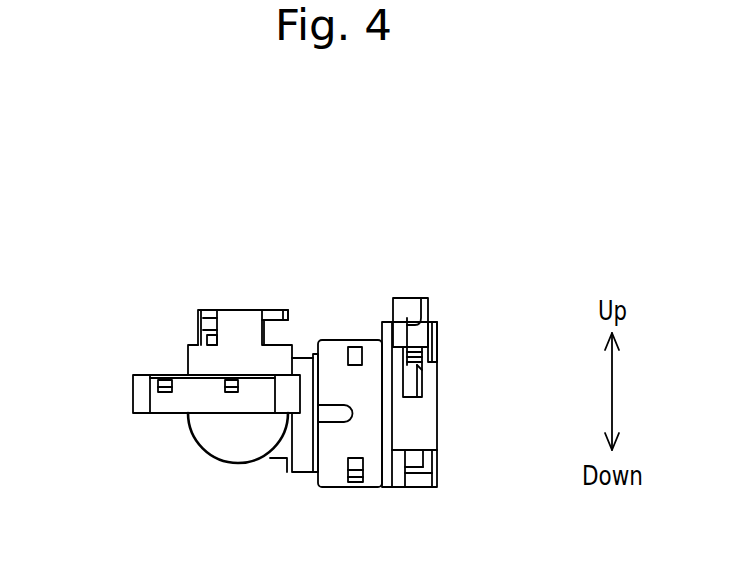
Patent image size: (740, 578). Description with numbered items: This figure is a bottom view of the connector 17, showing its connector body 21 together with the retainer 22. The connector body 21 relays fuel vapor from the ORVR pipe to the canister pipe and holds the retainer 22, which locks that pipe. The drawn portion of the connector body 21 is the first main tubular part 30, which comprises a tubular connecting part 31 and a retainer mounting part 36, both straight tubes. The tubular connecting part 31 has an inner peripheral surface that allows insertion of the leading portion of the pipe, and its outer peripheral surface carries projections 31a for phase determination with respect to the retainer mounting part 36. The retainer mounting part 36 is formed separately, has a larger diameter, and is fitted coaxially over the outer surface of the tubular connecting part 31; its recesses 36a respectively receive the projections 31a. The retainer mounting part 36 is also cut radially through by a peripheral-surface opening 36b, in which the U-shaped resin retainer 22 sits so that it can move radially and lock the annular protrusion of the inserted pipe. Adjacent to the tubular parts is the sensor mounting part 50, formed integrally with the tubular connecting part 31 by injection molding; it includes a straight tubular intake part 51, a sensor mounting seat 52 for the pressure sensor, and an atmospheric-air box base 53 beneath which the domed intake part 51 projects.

The connector with the sensor 17 is at (482, 203).
The connector body 21 is at (195, 307).
The retainer 22 is at (434, 295).
The first main tubular part 30 is at (392, 220).
The tubular connecting part 31 is at (302, 360).
The projections 31a is at (358, 347).
The retainer mounting part 36 is at (335, 357).
The recesses 36a is at (366, 470).
The peripheral-surface opening 36b is at (416, 298).
The sensor mounting part 50 is at (199, 456).
The tubular intake part 51 is at (233, 450).
The sensor mounting seat 52 is at (273, 316).
The atmospheric-air box base 53 is at (157, 373).